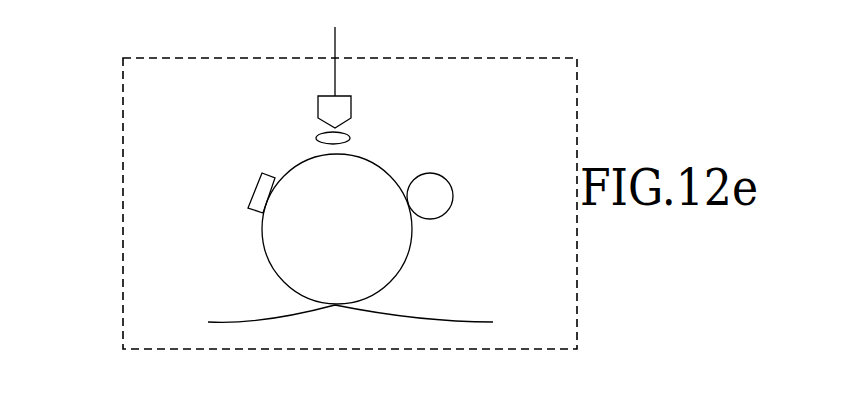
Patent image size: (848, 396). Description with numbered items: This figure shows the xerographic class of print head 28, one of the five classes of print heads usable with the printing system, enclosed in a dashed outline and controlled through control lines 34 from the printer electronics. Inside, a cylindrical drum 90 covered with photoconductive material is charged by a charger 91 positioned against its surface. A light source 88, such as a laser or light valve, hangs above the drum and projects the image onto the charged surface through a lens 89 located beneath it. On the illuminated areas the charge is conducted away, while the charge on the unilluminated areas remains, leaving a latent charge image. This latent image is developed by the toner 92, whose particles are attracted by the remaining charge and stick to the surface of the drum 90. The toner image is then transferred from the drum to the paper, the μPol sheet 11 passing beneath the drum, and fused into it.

The print head 28 is at (122, 183).
The control lines 34 is at (335, 52).
The light source housing 88 is at (351, 105).
The lens 89 is at (318, 138).
The cylindrical drum 90 is at (403, 252).
The charger 91 is at (258, 192).
The toner 92 is at (432, 178).
The μPol sheet 11 is at (400, 313).